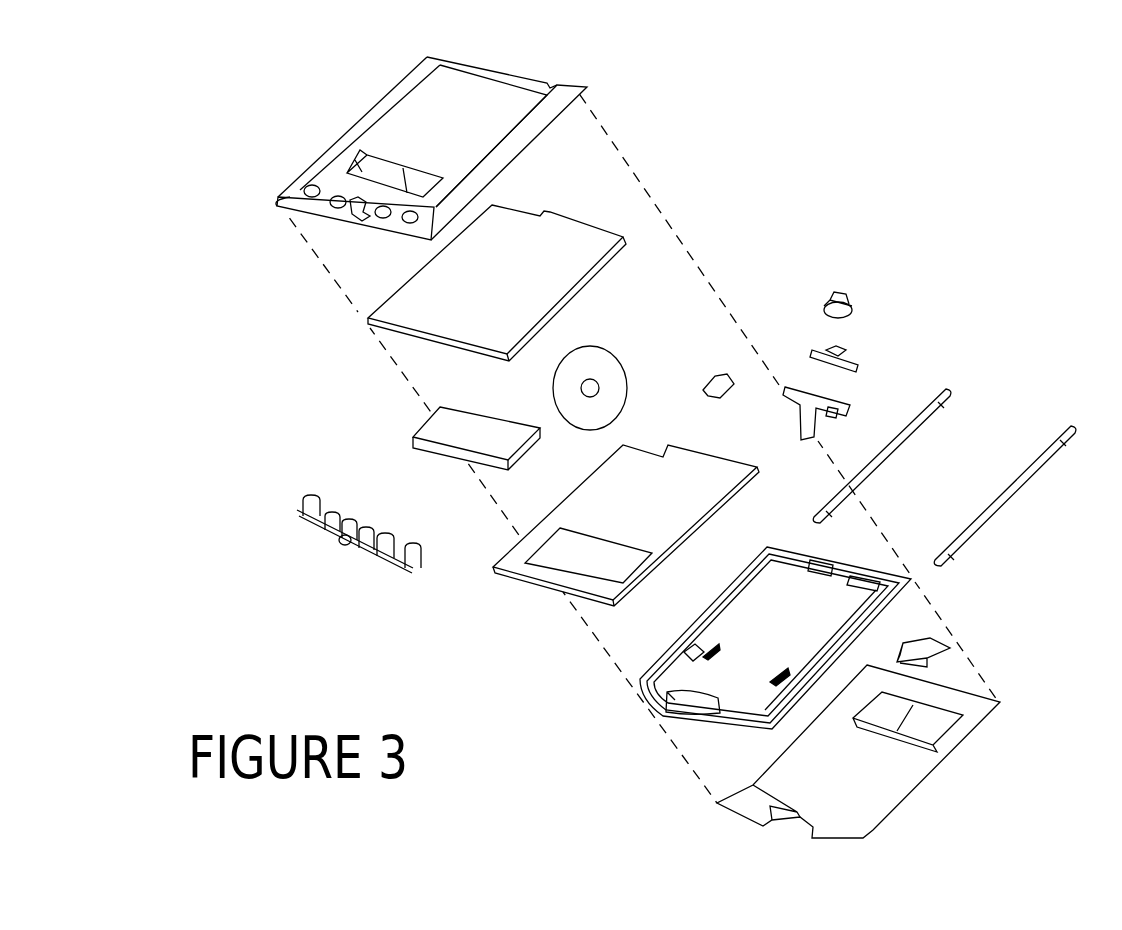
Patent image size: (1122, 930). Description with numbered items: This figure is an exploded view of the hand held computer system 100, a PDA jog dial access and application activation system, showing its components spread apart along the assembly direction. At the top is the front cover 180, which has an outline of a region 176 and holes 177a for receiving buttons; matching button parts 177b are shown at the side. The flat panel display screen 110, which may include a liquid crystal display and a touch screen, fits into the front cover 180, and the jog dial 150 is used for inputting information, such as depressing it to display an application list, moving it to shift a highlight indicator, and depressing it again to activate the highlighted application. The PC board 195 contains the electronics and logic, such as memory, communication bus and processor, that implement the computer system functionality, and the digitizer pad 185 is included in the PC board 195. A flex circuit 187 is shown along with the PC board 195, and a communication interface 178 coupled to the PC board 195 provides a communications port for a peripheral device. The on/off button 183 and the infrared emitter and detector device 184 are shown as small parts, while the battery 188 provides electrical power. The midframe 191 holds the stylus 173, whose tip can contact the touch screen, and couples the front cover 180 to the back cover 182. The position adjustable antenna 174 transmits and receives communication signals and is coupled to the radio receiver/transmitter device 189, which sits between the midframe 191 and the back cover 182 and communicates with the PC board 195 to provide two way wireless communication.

The hand held computer system 100 is at (170, 54).
The display screen 110 is at (600, 228).
The jog dial 150 is at (598, 345).
The stylus 173 is at (1044, 476).
The position adjustable antenna 174 is at (948, 389).
The region 176 is at (370, 160).
The holes 177a is at (285, 205).
The latch hooks 177b is at (301, 500).
The communication interface 178 is at (716, 656).
The front cover 180 is at (583, 86).
The back cover 182 is at (956, 762).
The on/off button 183 is at (840, 290).
The infrared emitter and detector device 184 is at (858, 356).
The digitizer pad 185 is at (414, 421).
The flex circuit 187 is at (850, 402).
The battery 188 is at (950, 658).
The radio receiver/transmitter device 189 is at (712, 371).
The midframe 191 is at (897, 613).
The PC board 195 is at (512, 544).